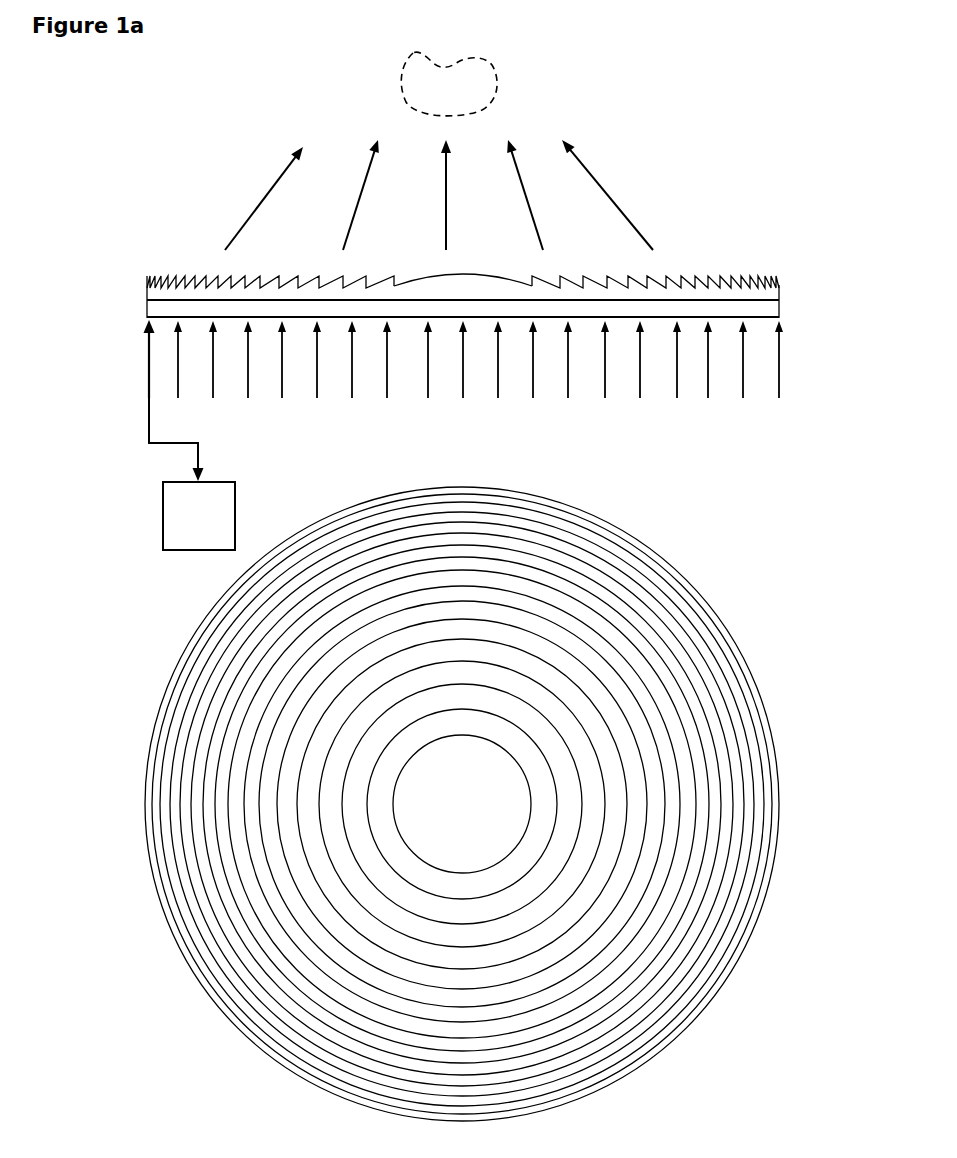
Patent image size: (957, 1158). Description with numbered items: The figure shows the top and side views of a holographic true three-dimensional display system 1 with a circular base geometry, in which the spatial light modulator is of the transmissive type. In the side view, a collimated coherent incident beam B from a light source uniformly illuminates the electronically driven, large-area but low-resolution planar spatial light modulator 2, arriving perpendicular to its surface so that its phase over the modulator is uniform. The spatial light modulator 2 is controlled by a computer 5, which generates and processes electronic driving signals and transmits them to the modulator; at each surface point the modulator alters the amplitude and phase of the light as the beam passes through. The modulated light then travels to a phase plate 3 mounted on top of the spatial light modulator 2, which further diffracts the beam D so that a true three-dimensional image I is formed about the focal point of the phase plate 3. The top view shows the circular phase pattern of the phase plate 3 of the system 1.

The system 1 is at (485, 596).
The spatial light modulator 2 is at (779, 311).
The phase plate 3 is at (779, 285).
The computer 5 is at (235, 500).
The incident beam B is at (779, 382).
The diffracted beam D is at (622, 213).
The true 3D image I is at (499, 74).